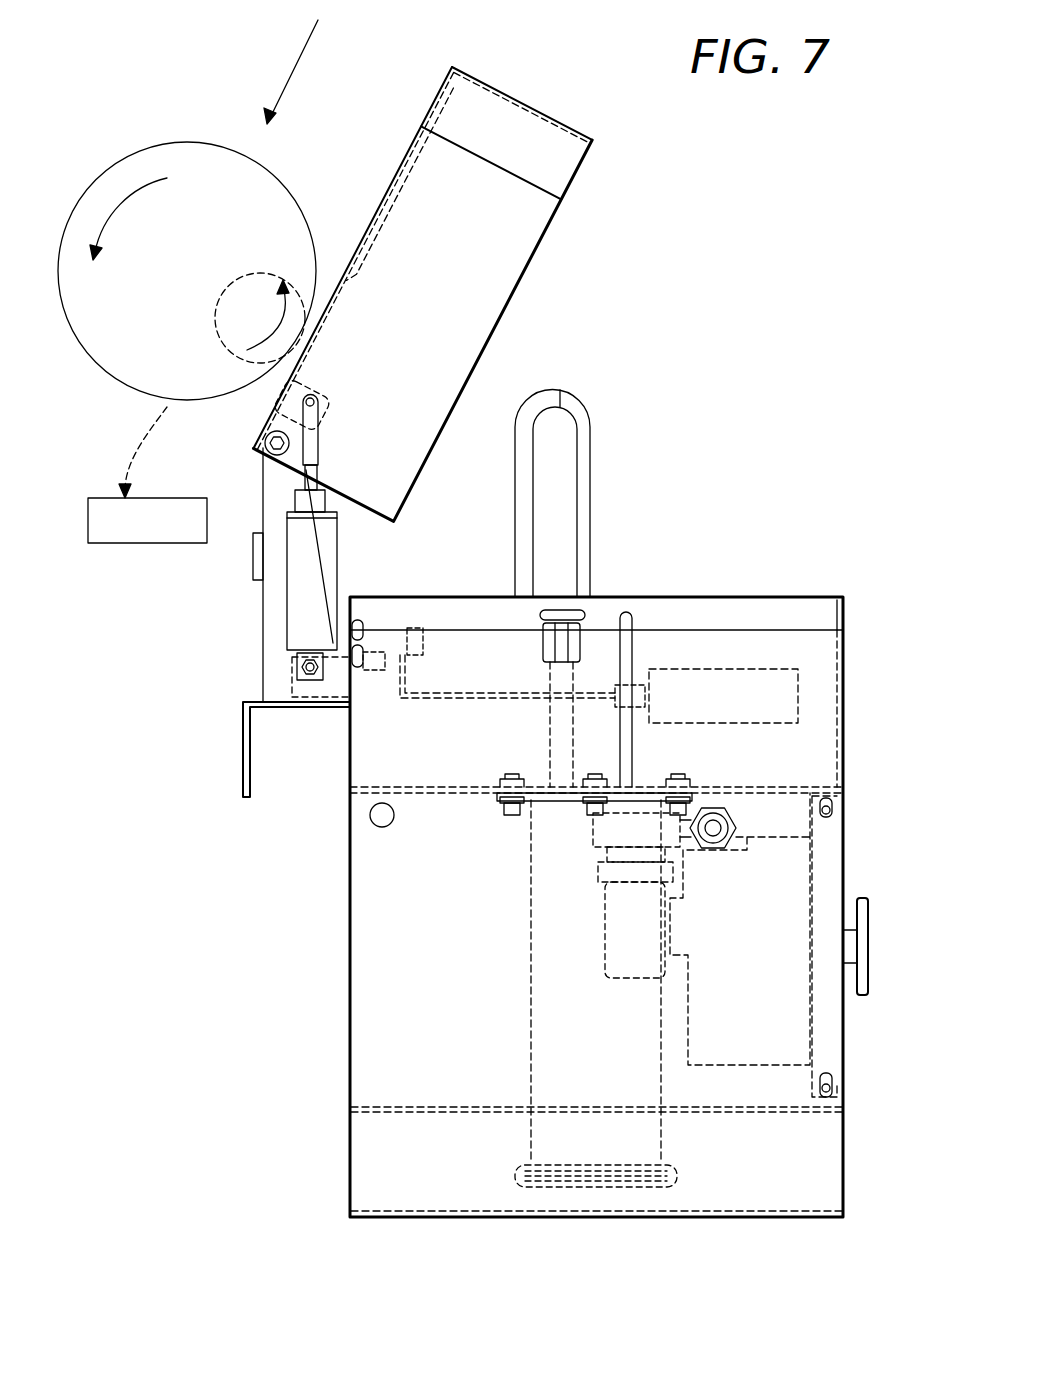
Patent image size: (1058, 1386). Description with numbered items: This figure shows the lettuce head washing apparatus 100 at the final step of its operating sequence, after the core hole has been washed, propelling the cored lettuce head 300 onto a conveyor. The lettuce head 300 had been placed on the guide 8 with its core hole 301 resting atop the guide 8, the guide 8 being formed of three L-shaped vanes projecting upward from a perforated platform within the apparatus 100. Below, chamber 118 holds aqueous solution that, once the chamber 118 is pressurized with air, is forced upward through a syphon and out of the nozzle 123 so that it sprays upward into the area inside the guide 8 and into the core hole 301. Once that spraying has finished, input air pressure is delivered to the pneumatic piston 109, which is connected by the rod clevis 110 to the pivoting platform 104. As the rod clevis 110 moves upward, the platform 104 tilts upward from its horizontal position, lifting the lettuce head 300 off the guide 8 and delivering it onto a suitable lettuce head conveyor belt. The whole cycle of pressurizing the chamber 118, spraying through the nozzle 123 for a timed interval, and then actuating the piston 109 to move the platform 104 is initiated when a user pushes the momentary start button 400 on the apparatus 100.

The cored lettuce head 300 is at (283, 182).
The core hole 301 is at (213, 333).
The platform 104 is at (541, 240).
The rod clevis 110 is at (320, 426).
The pneumatic piston 109 is at (338, 532).
The guide 8 is at (590, 513).
The nozzle 123 is at (584, 614).
The chamber 118 is at (530, 975).
The lettuce head washing apparatus 100 is at (348, 1006).
The momentary start button 400 is at (861, 897).